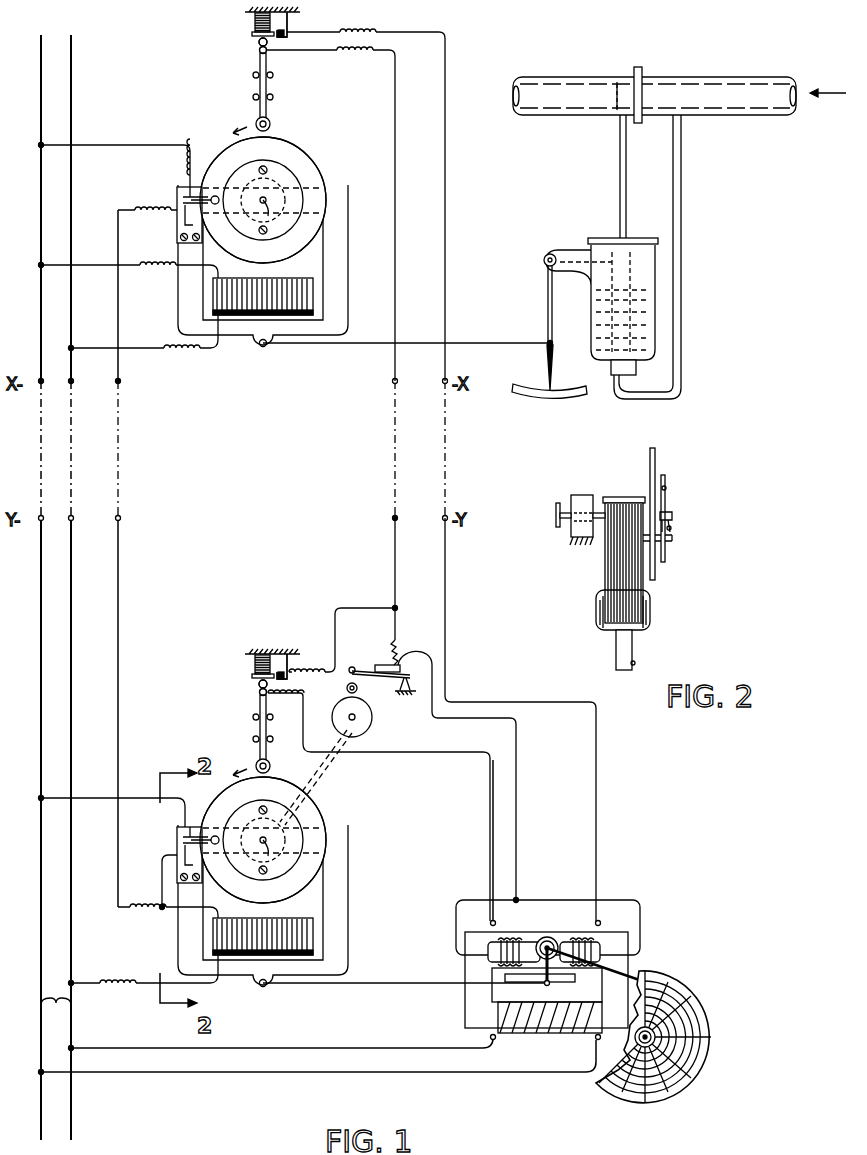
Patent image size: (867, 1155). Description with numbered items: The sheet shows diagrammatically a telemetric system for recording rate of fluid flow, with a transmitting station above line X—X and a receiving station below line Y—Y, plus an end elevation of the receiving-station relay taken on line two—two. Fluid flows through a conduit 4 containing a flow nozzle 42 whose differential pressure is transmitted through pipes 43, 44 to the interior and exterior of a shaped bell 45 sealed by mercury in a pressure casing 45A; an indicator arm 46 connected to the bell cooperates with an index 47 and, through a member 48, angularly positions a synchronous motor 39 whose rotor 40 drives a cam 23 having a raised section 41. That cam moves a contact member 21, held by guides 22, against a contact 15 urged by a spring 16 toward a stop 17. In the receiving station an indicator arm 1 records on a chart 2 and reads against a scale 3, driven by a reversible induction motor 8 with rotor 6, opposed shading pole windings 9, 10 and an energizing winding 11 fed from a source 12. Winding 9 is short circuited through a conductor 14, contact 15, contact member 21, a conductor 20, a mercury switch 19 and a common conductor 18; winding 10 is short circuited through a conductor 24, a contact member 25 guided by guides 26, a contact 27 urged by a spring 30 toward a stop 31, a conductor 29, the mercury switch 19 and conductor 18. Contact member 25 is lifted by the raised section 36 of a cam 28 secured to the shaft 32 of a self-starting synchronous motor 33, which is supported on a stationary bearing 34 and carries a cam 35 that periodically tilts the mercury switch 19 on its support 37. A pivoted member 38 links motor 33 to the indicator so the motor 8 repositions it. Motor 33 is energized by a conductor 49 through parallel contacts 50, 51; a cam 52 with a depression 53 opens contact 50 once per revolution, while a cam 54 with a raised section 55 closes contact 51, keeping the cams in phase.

In FIG. 1, the indicator arm 1 is at (600, 976).
In FIG. 1, the chart 2 is at (709, 1032).
In FIG. 1, the scale 3 is at (690, 992).
In FIG. 1, the conduit 4 is at (556, 77).
In FIG. 1, the rotor 6 is at (549, 938).
In FIG. 1, the reversible induction motor 8 is at (640, 932).
In FIG. 1, the shading pole winding 9 is at (588, 944).
In FIG. 1, the opposed shading pole winding 10 is at (502, 863).
In FIG. 1, the energizing winding 11 is at (535, 1033).
In FIG. 1, the source 12 is at (56, 594).
In FIG. 1, the conductor 14 is at (596, 788).
In FIG. 1, the contact 15 is at (258, 42).
In FIG. 1, the spring 16 is at (255, 20).
In FIG. 1, the stop 17 is at (290, 30).
In FIG. 1, the common conductor 18 is at (516, 766).
In FIG. 1, the mercury switch 19 is at (386, 668).
In FIG. 1, the conductor 20 is at (395, 552).
In FIG. 1, the contact member 21 is at (258, 52).
In FIG. 1, the guides 22 is at (268, 95).
In FIG. 1, the cam 23 is at (318, 158).
In FIG. 1, the conductor 24 is at (490, 838).
In FIG. 1, the contact member 25 is at (258, 695).
In FIG. 1, the guides 26 is at (268, 740).
In FIG. 1, the contact 27 is at (258, 684).
In FIG. 1, the cam 28 is at (323, 808).
In FIG. 2, the cam 28 is at (660, 456).
In FIG. 1, the conductor 29 is at (335, 628).
In FIG. 1, the spring 30 is at (255, 662).
In FIG. 1, the stop 31 is at (290, 675).
In FIG. 1, the shaft 32 is at (268, 806).
In FIG. 2, the shaft 32 is at (598, 500).
In FIG. 1, the self-starting synchronous motor 33 is at (348, 895).
In FIG. 2, the self-starting synchronous motor 33 is at (605, 592).
In FIG. 2, the stationary bearing 34 is at (568, 553).
In FIG. 1, the cam 35 is at (372, 720).
In FIG. 2, the cam 35 is at (555, 512).
In FIG. 1, the raised section 36 is at (234, 784).
In FIG. 1, the support 37 is at (402, 689).
In FIG. 1, the pivoted member 38 is at (385, 983).
In FIG. 1, the synchronous motor 39 is at (348, 232).
In FIG. 1, the rotor 40 is at (270, 216).
In FIG. 1, the raised section 41 is at (234, 142).
In FIG. 1, the flow nozzle 42 is at (640, 78).
In FIG. 1, the pipe 43 is at (681, 186).
In FIG. 1, the pipe 44 is at (626, 170).
In FIG. 1, the shaped bell 45 is at (640, 276).
In FIG. 1, the pressure casing 45A is at (592, 320).
In FIG. 1, the indicator arm 46 is at (547, 306).
In FIG. 1, the index 47 is at (538, 396).
In FIG. 1, the member 48 is at (462, 343).
In FIG. 1, the conductor 49 is at (155, 982).
In FIG. 1, the contact 50 is at (178, 840).
In FIG. 2, the contact 50 is at (675, 516).
In FIG. 1, the contact 51 is at (178, 200).
In FIG. 1, the cam 52 is at (282, 866).
In FIG. 2, the cam 52 is at (668, 498).
In FIG. 1, the depression 53 is at (274, 876).
In FIG. 1, the cam 54 is at (282, 162).
In FIG. 1, the raised section 55 is at (270, 246).